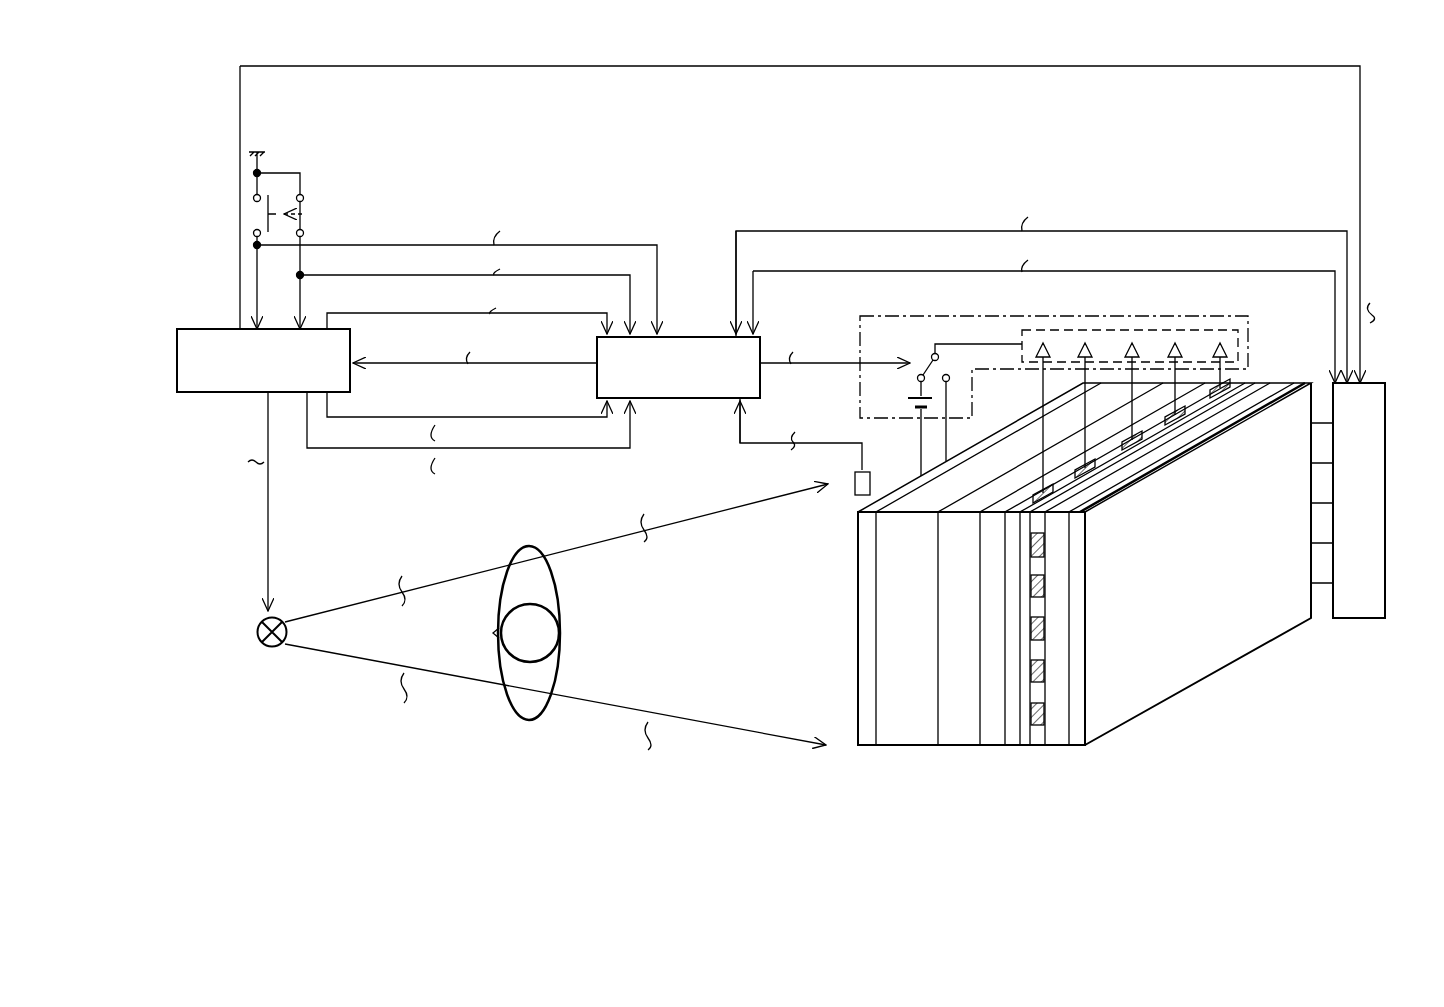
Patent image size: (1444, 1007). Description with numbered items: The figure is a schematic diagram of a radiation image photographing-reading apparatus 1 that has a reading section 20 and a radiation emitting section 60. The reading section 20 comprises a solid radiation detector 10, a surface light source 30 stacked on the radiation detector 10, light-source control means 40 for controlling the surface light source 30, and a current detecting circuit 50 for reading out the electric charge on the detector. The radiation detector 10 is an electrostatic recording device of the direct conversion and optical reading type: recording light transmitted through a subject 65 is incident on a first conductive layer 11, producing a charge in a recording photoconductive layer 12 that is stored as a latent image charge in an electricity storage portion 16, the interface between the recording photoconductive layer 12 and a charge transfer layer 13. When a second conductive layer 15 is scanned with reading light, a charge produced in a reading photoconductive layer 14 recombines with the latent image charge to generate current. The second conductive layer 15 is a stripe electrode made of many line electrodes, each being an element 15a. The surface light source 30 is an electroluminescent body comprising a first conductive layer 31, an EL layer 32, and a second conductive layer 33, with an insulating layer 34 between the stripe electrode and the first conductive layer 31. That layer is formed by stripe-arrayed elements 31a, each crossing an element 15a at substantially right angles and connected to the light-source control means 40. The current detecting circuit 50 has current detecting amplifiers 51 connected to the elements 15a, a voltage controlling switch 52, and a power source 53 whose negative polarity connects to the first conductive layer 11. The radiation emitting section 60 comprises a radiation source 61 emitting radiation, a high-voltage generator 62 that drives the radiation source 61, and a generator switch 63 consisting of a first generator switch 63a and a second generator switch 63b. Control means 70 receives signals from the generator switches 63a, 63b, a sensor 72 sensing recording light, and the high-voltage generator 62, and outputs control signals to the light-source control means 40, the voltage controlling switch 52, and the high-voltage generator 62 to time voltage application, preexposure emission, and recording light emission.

The radiation image photographing-reading apparatus 1 is at (1400, 97).
The solid radiation detector 10 is at (1079, 620).
The first conductive layer 11 is at (865, 747).
The recording photoconductive layer 12 is at (890, 747).
The charge transfer layer 13 is at (950, 747).
The reading photoconductive layer 14 is at (988, 747).
The second conductive layer 15 is at (1115, 601).
The element 15a is at (1240, 388).
The electricity storage portion 16 is at (938, 712).
The reading section 20 is at (1384, 327).
The surface light source 30 is at (1161, 620).
The first conductive layer 31 is at (1146, 601).
The element 31a is at (1038, 748).
The EL layer 32 is at (1058, 748).
The second conductive layer 33 is at (1191, 601).
The insulating layer 34 is at (1027, 747).
The light-source control means 40 is at (1386, 392).
The current detecting circuit 50 is at (1252, 320).
The current detecting amplifier 51 is at (1232, 354).
The voltage controlling switch 52 is at (926, 358).
The power source 53 is at (912, 404).
The radiation emitting section 60 is at (200, 308).
The radiation source 61 is at (266, 648).
The high-voltage generator 62 is at (226, 329).
The generator switch 63 is at (323, 209).
The first generator switch 63a is at (304, 195).
The second generator switch 63b is at (264, 193).
The subject 65 is at (514, 716).
The control means 70 is at (698, 336).
The sensor 72 is at (870, 472).